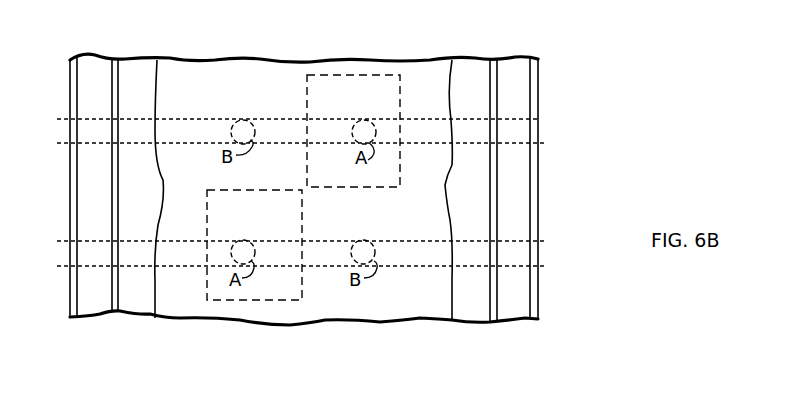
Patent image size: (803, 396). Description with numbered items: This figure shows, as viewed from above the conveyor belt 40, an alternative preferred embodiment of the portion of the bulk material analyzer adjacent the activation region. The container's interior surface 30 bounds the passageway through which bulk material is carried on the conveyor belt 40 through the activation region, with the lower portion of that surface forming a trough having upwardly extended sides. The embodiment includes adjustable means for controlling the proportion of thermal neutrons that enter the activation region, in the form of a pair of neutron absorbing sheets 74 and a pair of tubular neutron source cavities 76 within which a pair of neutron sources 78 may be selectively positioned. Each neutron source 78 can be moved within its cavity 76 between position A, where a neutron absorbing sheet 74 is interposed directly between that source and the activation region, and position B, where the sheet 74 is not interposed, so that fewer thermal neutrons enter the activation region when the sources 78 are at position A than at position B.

The interior surface 30 is at (97, 81).
The conveyor belt 40 is at (140, 67).
The neutron absorbing sheets 74 is at (388, 78).
The tubular neutron source cavities 76 is at (542, 118).
The neutron sources 78 is at (240, 118).